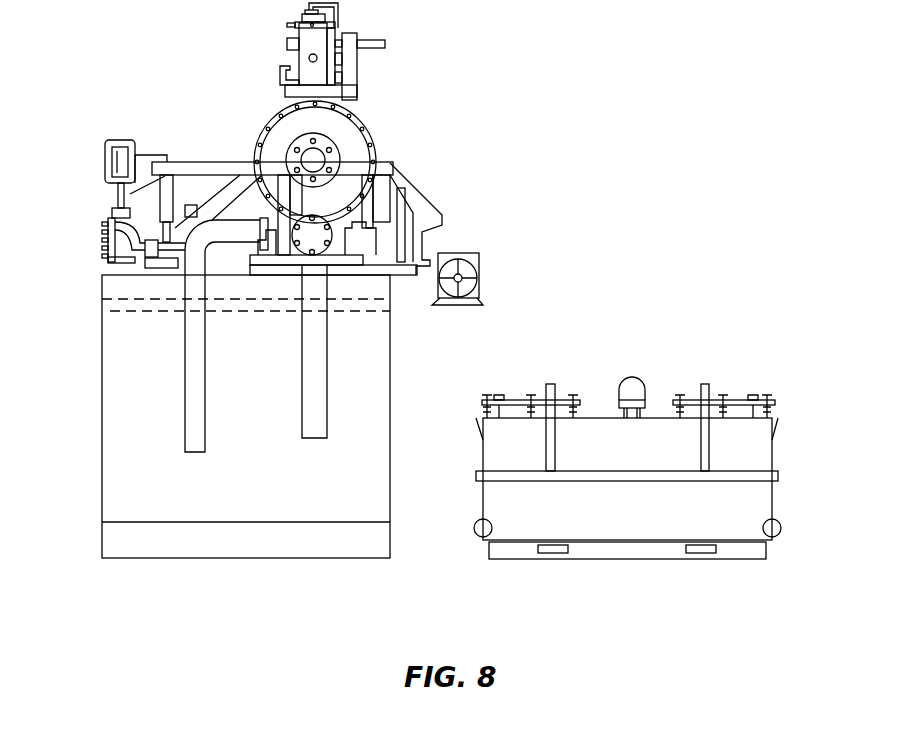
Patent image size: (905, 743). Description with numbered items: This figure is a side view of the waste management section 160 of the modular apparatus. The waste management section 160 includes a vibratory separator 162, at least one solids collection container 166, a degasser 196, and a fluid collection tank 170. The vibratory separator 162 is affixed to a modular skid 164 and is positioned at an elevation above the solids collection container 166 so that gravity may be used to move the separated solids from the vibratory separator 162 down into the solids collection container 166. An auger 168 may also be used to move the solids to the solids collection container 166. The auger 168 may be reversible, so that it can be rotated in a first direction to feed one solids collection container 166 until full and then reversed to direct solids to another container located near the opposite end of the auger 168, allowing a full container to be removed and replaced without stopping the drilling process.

The waste management section 160 is at (735, 82).
The vibratory separator 162 is at (198, 148).
The modular skid 164 is at (402, 277).
The solids collection container 166 is at (737, 400).
The auger 168 is at (481, 262).
The fluid collection tank 170 is at (118, 410).
The degasser 196 is at (364, 118).